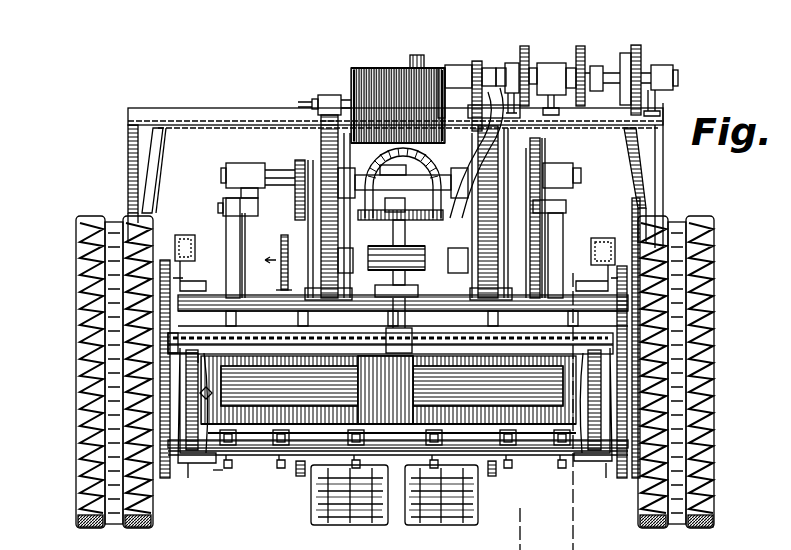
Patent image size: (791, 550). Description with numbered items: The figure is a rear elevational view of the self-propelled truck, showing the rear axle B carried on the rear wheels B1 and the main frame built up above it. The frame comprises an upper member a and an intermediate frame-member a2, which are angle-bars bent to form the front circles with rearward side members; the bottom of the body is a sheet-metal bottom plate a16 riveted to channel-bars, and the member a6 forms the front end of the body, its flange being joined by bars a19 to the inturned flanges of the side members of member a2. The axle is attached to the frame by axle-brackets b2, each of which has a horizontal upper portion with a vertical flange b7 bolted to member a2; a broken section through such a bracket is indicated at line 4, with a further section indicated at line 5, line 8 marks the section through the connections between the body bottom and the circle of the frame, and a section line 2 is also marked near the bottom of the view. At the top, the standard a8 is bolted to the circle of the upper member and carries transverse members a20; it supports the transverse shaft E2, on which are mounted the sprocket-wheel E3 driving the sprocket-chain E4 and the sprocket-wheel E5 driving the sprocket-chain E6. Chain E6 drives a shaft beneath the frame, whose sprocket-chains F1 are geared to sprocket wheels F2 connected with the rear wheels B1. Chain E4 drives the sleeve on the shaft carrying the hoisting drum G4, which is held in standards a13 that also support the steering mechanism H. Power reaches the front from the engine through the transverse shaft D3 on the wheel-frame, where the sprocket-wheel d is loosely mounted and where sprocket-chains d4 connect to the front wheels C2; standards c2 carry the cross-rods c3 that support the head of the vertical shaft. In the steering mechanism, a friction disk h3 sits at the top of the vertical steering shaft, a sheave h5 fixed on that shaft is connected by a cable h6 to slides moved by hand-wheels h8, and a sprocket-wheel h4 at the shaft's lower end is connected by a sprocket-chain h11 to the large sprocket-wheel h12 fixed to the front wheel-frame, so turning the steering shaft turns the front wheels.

The transverse members a20 is at (206, 104).
The standard a8 is at (120, 155).
The rear wheels B1 is at (70, 362).
The hoisting drum G4 is at (345, 62).
The steering mechanism H is at (326, 86).
The sprocket-chain E4 is at (462, 55).
The sprocket-wheel E3 is at (516, 40).
The sprocket-wheel E5 is at (624, 40).
The sprocket-chain E6 is at (634, 48).
The transverse shaft E2 is at (670, 76).
The standards a13 is at (313, 132).
The cross-rods c3 is at (263, 203).
The friction disk h3 is at (403, 197).
The sheave h5 is at (420, 244).
The cable h6 is at (422, 262).
The sprocket-wheel h4 is at (380, 330).
The hand-wheels h8 is at (361, 258).
The section line 8 is at (558, 484).
The sprocket-wheel d is at (536, 146).
The transverse shaft D3 is at (573, 168).
The sprocket-chains F1 is at (156, 250).
The standards c2 is at (222, 248).
The upper frame member a is at (174, 268).
The large sprocket-wheel h12 is at (590, 325).
The sprocket-chain h11 is at (600, 338).
The bars a19 is at (170, 340).
The front end member a6 is at (478, 490).
The sheet-metal bottom plate a16 is at (325, 418).
The sprocket-chains d4 is at (260, 420).
The front wheels C2 is at (330, 518).
The intermediate frame-member a2 is at (400, 520).
The rear axle B is at (530, 458).
The sprocket wheels F2 is at (158, 470).
The axle-brackets b2 is at (190, 457).
The vertical flange b7 is at (222, 510).
The section line 4 is at (571, 402).
The section line 5 is at (521, 529).
The section line 2 is at (562, 546).